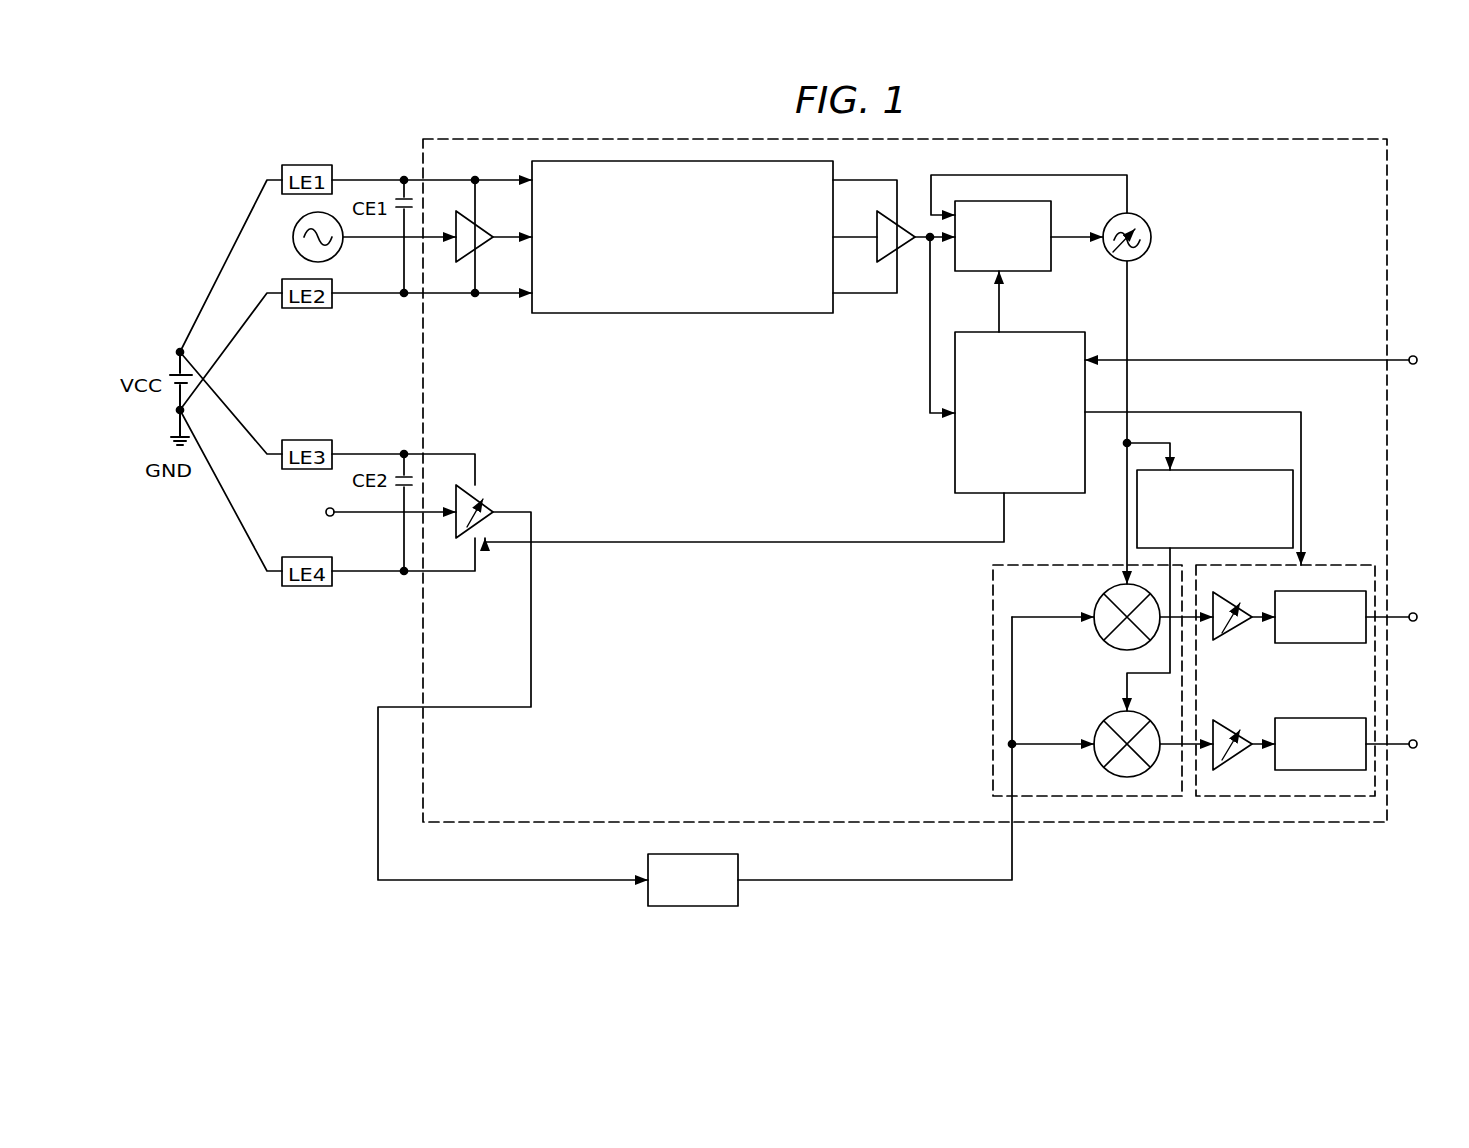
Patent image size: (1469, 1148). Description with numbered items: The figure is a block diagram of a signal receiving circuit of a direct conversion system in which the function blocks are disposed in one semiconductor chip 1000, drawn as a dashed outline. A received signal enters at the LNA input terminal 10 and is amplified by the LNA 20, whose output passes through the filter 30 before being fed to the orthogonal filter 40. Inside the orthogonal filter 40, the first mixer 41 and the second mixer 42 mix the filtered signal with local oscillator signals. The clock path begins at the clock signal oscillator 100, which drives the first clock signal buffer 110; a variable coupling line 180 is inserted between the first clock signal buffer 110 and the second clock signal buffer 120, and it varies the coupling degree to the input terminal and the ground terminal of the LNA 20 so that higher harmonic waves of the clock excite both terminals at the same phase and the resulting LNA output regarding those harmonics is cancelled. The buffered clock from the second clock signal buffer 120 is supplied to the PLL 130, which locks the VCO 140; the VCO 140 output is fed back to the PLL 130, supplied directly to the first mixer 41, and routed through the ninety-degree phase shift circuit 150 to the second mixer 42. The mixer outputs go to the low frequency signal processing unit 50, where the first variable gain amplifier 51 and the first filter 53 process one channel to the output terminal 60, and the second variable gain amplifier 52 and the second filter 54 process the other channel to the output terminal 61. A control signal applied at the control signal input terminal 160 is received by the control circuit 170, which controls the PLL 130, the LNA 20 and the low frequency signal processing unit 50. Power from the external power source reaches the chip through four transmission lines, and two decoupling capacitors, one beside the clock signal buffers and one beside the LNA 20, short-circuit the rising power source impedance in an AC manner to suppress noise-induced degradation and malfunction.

The LNA input terminal 10 is at (327, 510).
The LNA 20 is at (485, 497).
The filter 30 is at (693, 906).
The orthogonal filter 40 is at (993, 690).
The first mixer 41 is at (1108, 650).
The second mixer 42 is at (1100, 722).
The low frequency signal processing unit 50 is at (1336, 560).
The first variable gain amplifier 51 is at (1235, 640).
The second variable gain amplifier 52 is at (1228, 718).
The first filter 53 is at (1337, 643).
The second filter 54 is at (1310, 718).
The output terminal 60 is at (1415, 611).
The output terminal 61 is at (1415, 738).
The clock signal oscillator 100 is at (294, 242).
The first clock signal buffer 110 is at (480, 252).
The second clock signal buffer 120 is at (903, 252).
The PLL 130 is at (1035, 271).
The VCO 140 is at (1152, 232).
The 90-degree phase shift circuit 150 is at (1216, 468).
The control signal input terminal 160 is at (1416, 354).
The control circuit 170 is at (955, 458).
The variable coupling line 180 is at (683, 313).
The semiconductor chip 1000 is at (1387, 483).